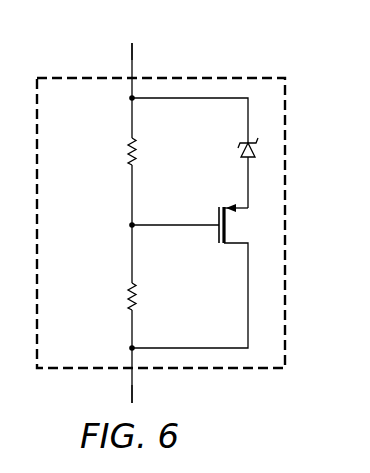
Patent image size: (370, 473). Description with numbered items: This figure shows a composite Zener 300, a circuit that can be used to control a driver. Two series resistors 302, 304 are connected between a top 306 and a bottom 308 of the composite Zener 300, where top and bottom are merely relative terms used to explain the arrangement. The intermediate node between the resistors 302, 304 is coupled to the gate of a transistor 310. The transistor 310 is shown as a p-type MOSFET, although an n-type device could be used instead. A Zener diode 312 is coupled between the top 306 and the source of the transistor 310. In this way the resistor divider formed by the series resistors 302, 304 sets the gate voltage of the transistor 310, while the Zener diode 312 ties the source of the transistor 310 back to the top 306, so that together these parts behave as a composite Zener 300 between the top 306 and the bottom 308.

The composite Zener 300 is at (205, 64).
The series resistor 302 is at (128, 150).
The series resistor 304 is at (128, 298).
The top 306 is at (130, 62).
The bottom 308 is at (130, 385).
The transistor 310 is at (217, 212).
The Zener diode 312 is at (240, 150).